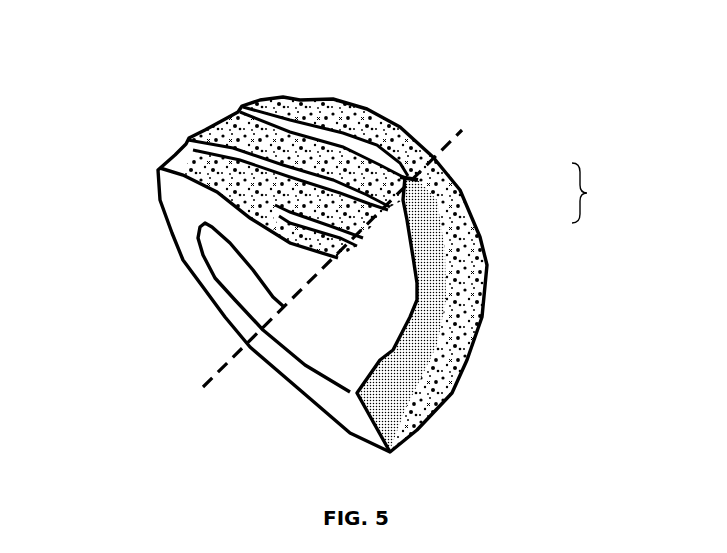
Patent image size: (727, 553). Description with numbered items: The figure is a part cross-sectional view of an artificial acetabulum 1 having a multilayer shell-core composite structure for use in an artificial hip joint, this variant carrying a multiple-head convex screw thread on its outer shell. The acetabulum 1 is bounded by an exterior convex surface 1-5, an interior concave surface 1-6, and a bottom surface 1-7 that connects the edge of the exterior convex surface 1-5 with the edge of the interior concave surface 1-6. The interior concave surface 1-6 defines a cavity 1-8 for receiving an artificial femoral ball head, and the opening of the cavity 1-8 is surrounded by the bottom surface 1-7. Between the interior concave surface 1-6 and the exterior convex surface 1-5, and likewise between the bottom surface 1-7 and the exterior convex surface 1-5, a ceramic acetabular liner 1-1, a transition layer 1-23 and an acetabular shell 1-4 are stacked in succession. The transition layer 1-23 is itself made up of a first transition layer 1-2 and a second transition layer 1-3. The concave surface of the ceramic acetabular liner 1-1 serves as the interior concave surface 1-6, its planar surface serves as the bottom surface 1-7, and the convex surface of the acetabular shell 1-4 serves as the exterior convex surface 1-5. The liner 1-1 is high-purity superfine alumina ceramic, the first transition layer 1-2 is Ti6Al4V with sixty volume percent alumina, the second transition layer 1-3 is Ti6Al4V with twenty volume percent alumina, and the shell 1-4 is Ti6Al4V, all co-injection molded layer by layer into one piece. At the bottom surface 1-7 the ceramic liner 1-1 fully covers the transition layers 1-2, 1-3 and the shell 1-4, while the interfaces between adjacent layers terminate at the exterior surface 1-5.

The artificial acetabulum 1 is at (300, 90).
The ceramic acetabular liner 1-1 is at (405, 212).
The first transition layer 1-2 is at (470, 218).
The second transition layer 1-3 is at (483, 250).
The transition layer 1-23 is at (601, 193).
The acetabular shell 1-4 is at (483, 275).
The exterior convex surface 1-5 is at (483, 337).
The interior concave surface 1-6 is at (363, 358).
The bottom surface 1-7 is at (187, 207).
The cavity 1-8 is at (255, 294).